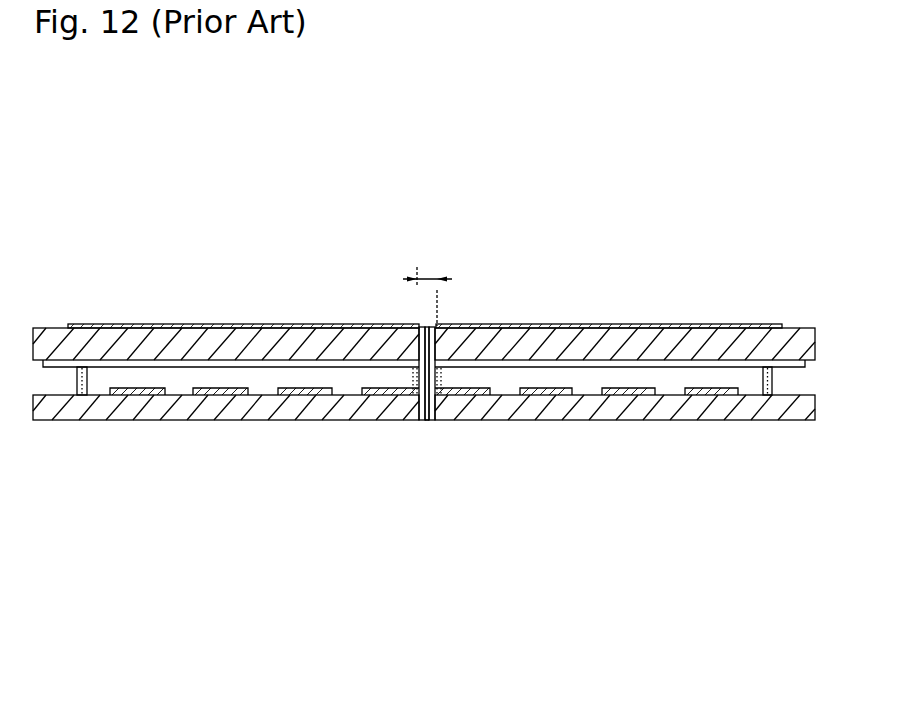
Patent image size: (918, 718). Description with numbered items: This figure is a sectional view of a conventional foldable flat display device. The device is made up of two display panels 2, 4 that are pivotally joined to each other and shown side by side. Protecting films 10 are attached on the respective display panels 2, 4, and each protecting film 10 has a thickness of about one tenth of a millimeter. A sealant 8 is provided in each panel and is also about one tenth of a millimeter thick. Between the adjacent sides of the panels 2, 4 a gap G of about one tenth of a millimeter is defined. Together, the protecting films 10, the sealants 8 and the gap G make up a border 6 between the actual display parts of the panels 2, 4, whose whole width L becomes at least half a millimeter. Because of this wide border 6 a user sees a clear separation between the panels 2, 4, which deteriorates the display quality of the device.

The display panel 2 is at (237, 320).
The display panel 4 is at (625, 310).
The border 6 is at (432, 318).
The sealant 8 is at (438, 383).
The protecting film 10 is at (705, 326).
The seam width L is at (425, 277).
The gap G is at (428, 435).